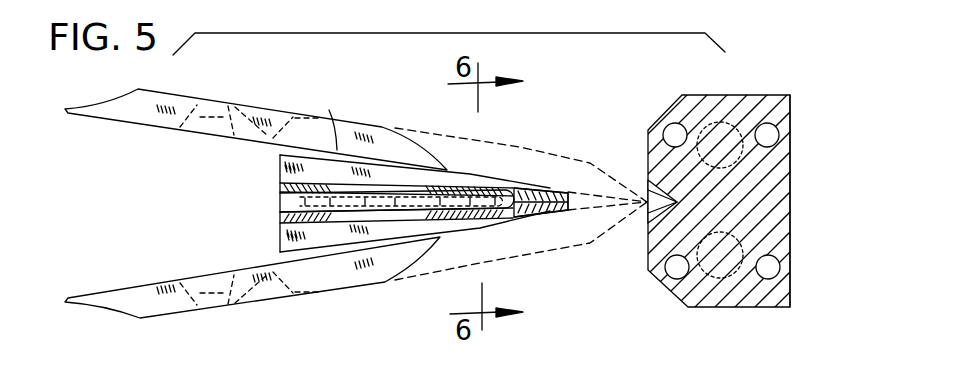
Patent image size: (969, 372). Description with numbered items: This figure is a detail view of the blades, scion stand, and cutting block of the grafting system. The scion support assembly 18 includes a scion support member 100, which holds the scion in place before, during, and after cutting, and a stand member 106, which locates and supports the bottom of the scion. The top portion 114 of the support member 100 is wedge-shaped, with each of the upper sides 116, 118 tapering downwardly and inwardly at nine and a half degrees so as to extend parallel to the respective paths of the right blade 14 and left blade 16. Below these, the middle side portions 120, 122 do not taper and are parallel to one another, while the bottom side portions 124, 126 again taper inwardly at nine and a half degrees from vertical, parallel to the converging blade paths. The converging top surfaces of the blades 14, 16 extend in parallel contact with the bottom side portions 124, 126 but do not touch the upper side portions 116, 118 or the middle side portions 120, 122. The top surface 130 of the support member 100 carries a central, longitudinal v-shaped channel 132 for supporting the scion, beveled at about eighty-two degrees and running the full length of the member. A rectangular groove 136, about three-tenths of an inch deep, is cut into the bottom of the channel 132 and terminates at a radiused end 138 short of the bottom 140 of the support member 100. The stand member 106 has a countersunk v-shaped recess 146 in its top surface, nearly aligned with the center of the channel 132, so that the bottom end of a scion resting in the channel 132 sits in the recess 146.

The right blade 14 is at (243, 107).
The left blade 16 is at (188, 313).
The scion support assembly 18 is at (640, 105).
The scion support member 100 is at (268, 179).
The stand member 106 is at (791, 143).
The top portion 114 is at (299, 155).
The upper side 116 is at (370, 165).
The upper side 118 is at (315, 248).
The middle side portion 120 is at (457, 173).
The middle side portion 122 is at (450, 236).
The bottom side portion 124 is at (528, 187).
The bottom side portion 126 is at (525, 222).
The top surface 130 is at (280, 155).
The v-shaped channel 132 is at (550, 188).
The rectangular groove 136 is at (300, 219).
The radiused end 138 is at (517, 187).
The bottom 140 is at (568, 210).
The recess 146 is at (648, 205).